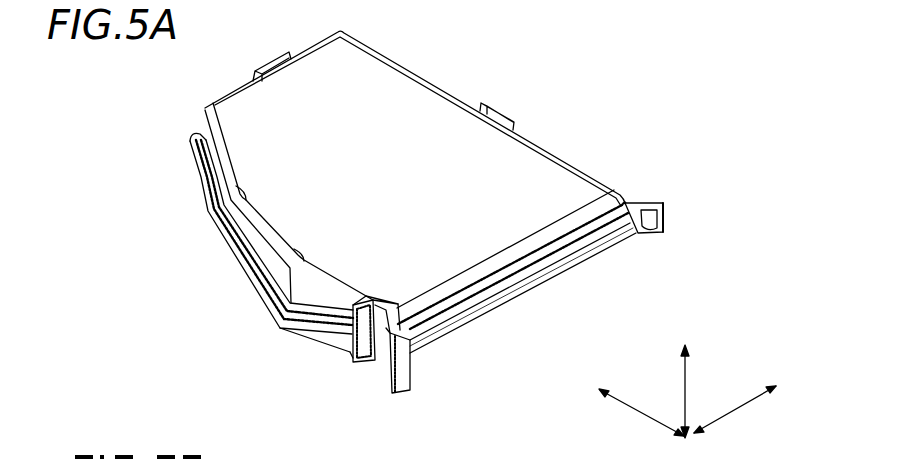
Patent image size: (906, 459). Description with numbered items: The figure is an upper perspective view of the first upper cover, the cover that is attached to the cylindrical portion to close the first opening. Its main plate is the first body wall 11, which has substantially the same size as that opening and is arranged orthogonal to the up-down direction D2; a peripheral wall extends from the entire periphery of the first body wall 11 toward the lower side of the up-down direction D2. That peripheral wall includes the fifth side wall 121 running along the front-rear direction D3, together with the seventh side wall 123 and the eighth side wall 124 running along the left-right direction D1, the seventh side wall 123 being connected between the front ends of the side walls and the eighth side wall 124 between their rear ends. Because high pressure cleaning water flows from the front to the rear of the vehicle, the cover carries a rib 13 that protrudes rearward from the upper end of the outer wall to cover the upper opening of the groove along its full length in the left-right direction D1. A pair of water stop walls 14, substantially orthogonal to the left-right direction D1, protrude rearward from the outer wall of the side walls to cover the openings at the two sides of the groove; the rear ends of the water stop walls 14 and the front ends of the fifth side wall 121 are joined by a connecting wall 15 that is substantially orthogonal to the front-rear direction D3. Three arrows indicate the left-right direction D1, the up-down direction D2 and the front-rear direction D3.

The first body wall 11 is at (425, 127).
The rib 13 is at (543, 265).
The water stop walls 14 is at (666, 216).
The connecting wall 15 is at (628, 202).
The fifth side wall 121 is at (264, 261).
The seventh side wall 123 is at (432, 405).
The eighth side wall 124 is at (611, 231).
The left-right direction D1 is at (738, 410).
The up-down direction D2 is at (683, 385).
The front-rear direction D3 is at (637, 415).